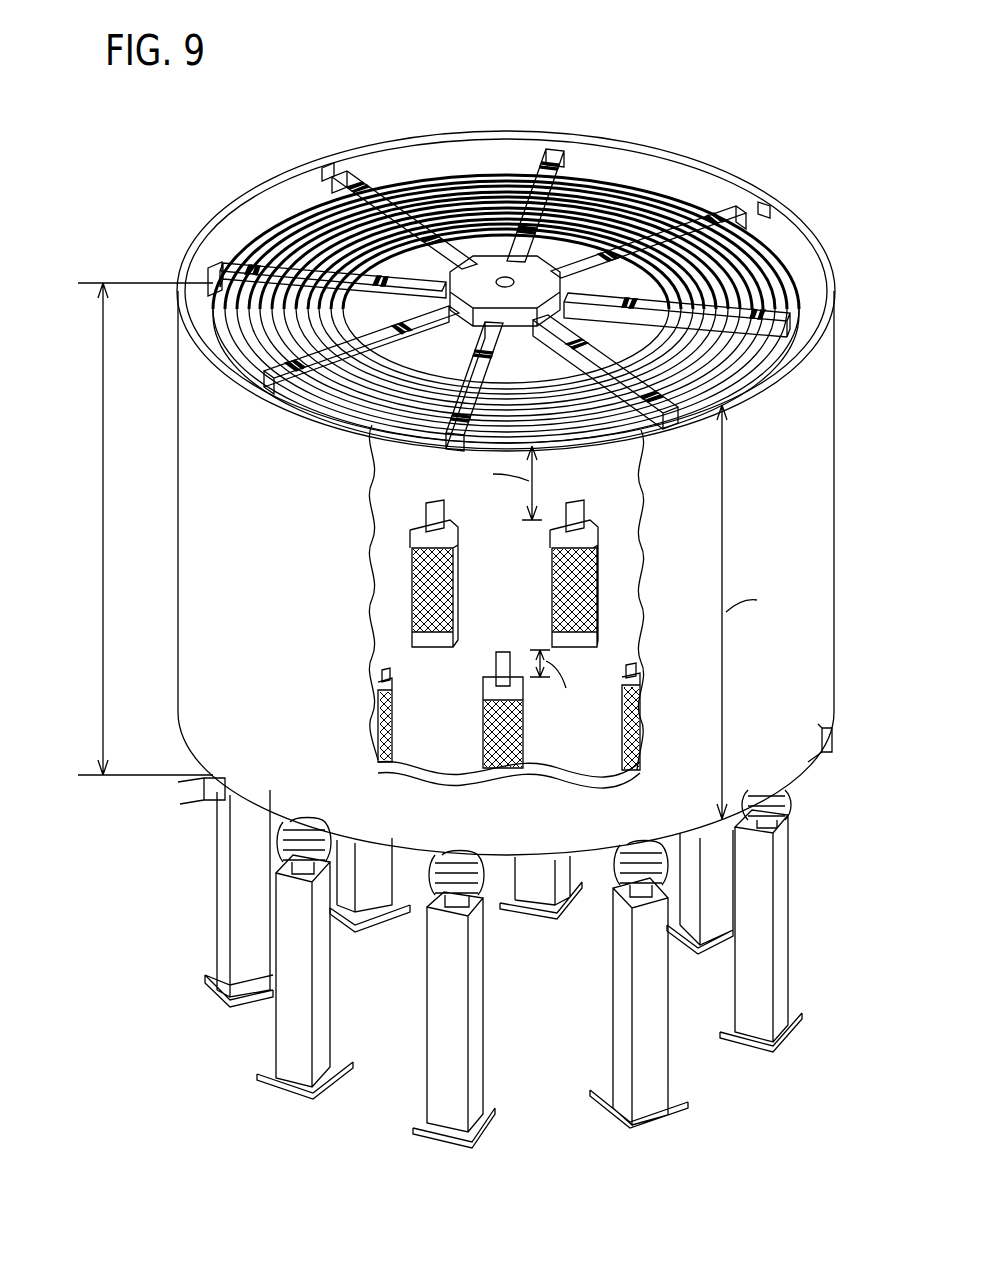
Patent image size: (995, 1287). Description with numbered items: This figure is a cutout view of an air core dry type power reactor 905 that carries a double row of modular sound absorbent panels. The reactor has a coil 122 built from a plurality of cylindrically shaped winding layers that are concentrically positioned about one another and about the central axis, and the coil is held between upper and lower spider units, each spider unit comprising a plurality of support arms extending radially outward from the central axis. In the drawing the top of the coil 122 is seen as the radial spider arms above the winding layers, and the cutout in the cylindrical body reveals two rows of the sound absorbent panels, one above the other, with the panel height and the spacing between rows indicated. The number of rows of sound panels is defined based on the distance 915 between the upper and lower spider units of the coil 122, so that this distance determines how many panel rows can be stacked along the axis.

The air core dry type power reactor 905 is at (784, 166).
The coil 122 is at (479, 184).
The distance (D) between the upper and lower spider units 915 is at (100, 472).